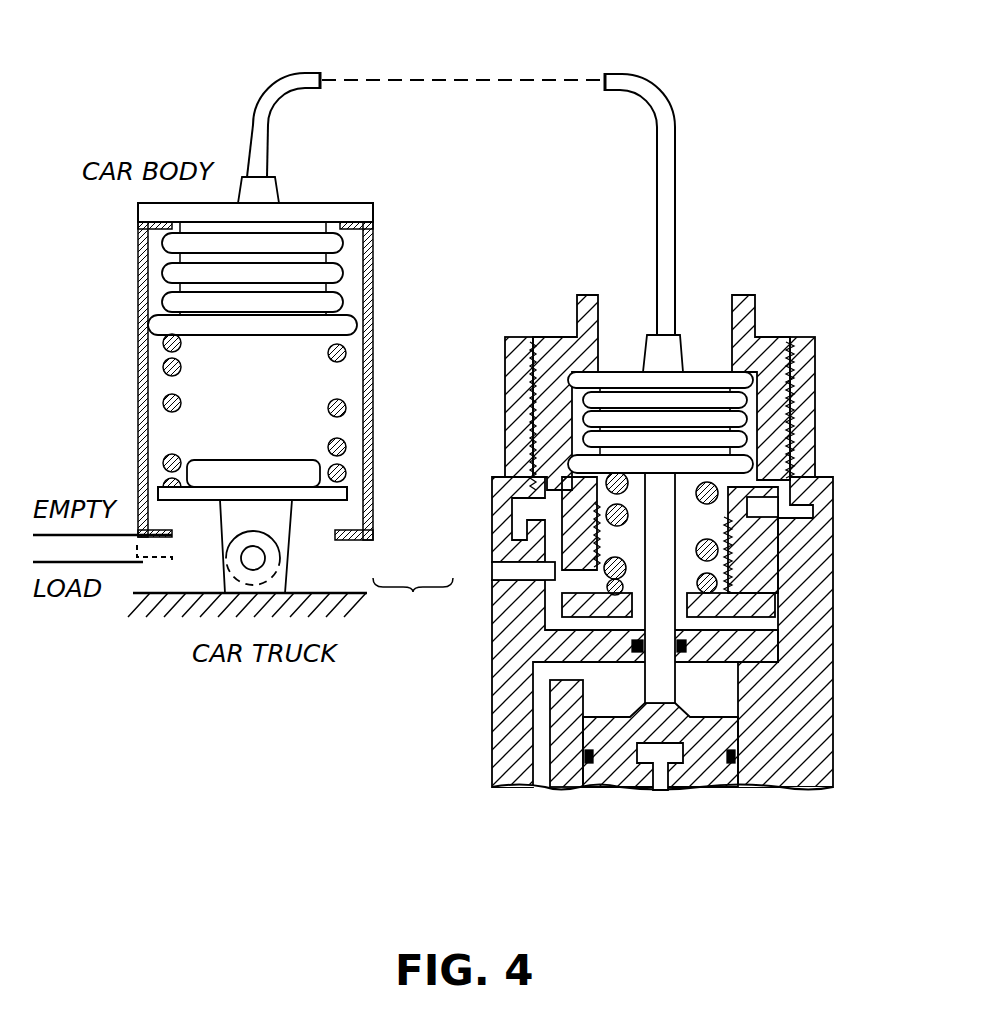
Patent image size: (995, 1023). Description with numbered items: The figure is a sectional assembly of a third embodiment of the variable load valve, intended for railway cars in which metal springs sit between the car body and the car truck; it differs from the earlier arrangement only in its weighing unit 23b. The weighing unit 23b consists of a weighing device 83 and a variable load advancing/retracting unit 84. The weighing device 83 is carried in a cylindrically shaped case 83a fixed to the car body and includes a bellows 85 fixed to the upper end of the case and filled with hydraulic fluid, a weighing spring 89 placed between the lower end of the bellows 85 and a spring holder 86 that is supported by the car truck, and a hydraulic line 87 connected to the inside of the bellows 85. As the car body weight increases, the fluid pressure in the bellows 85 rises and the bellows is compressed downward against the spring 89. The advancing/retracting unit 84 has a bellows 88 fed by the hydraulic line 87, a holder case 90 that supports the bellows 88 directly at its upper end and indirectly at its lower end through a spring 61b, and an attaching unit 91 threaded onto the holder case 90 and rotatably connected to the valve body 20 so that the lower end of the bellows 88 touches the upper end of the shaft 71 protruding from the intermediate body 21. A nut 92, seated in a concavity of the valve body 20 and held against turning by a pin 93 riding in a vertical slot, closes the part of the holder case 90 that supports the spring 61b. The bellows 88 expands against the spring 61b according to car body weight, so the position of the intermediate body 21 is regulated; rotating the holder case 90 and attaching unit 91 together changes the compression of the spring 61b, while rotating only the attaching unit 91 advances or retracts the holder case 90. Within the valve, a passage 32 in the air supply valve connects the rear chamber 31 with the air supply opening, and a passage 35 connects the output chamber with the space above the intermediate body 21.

The valve body 20 is at (658, 524).
The intermediate body 21 is at (607, 730).
The weighing unit 23b is at (413, 602).
The rear chamber 31 is at (672, 752).
The passage 32 is at (661, 790).
The passage 35 is at (540, 700).
The spring 61b is at (605, 577).
The shaft 71 is at (665, 677).
The weighing device 83 is at (374, 483).
The case 83a is at (375, 336).
The variable load advancing/retracting unit 84 is at (375, 278).
The bellows 85 is at (277, 243).
The spring holder 86 is at (160, 488).
The hydraulic line 87 is at (298, 68).
The bellows 88 is at (625, 377).
The weighing spring 89 is at (350, 408).
The holder case 90 is at (758, 313).
The attaching unit 91 is at (818, 398).
The nut 92 is at (760, 592).
The pin 93 is at (508, 572).